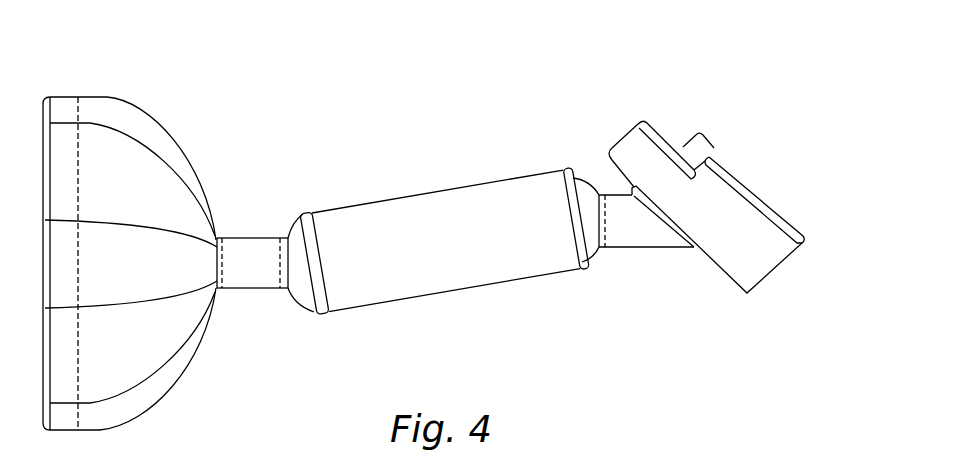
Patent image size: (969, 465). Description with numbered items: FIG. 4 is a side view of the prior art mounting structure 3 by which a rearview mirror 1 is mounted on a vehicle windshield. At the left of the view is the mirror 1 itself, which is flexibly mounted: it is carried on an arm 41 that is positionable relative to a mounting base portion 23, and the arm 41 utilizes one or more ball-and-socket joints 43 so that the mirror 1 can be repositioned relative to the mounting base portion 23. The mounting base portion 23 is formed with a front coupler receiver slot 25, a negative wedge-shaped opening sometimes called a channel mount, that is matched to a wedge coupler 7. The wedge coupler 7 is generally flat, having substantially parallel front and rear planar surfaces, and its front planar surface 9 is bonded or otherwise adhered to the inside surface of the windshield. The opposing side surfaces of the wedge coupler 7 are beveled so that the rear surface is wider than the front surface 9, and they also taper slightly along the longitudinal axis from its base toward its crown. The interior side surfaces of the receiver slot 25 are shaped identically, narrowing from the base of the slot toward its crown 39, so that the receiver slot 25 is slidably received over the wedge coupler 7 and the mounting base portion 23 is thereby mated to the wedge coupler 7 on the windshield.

The rearview mirror 1 is at (68, 93).
The head assembly 3 is at (698, 66).
The wedge coupler 7 is at (707, 145).
The front planar surface 9 is at (727, 158).
The mounting base portion 23 is at (727, 250).
The coupler receiver slot 25 is at (697, 172).
The crown 39 is at (625, 138).
The arm 41 is at (417, 212).
The ball-and-socket joint 43 is at (307, 278).